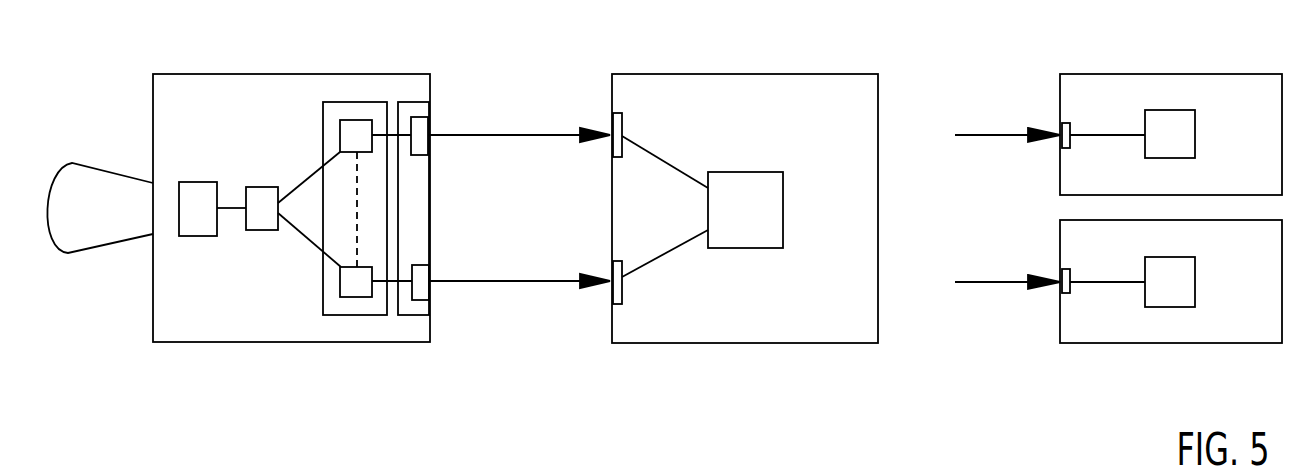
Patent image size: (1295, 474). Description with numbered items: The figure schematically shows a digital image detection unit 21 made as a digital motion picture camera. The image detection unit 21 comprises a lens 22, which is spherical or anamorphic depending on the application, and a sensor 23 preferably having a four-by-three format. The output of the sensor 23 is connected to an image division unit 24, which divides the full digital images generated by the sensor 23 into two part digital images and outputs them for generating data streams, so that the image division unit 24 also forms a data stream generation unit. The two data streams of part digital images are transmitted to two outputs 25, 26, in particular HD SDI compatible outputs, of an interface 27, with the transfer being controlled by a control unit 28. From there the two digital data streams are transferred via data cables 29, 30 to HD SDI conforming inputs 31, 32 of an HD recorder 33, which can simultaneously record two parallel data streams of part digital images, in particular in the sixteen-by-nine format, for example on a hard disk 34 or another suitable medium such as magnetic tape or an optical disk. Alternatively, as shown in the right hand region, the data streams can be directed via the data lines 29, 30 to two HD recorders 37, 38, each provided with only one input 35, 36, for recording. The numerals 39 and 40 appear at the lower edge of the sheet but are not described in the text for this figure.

The transmitter unit 21 is at (217, 88).
The antenna / horn 22 is at (83, 240).
The receiving unit 23 is at (197, 232).
The processing unit 24 is at (262, 230).
The first output port 25 is at (430, 145).
The second output port 26 is at (432, 273).
The output interface 27 is at (415, 307).
The converter unit 28 is at (352, 307).
The first data signal 29 is at (495, 132).
The second data signal 30 is at (507, 284).
The first input port 31 is at (612, 122).
The second input port 32 is at (612, 295).
The receiver unit 33 is at (697, 88).
The combining unit 34 is at (758, 233).
The first input of first receiver 35 is at (1062, 127).
The input of second receiver 36 is at (1060, 287).
The first receiver 37 is at (1103, 85).
The second receiver 38 is at (1118, 333).
The first device 39 is at (677, 468).
The second device 40 is at (267, 468).